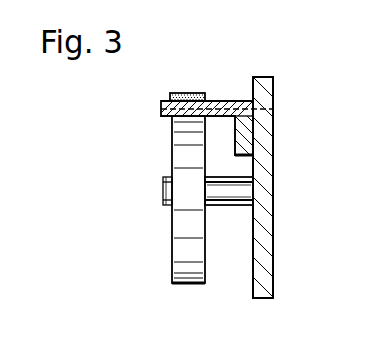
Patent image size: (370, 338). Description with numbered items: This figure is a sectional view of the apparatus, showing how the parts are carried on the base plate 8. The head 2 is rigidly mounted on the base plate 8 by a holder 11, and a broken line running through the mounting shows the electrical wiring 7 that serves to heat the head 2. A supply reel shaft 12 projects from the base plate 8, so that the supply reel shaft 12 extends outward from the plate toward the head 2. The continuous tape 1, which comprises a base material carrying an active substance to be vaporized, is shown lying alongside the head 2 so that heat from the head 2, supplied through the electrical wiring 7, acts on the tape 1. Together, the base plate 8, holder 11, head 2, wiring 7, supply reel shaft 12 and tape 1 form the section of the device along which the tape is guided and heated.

The continuous tape 1 is at (180, 162).
The head 2 is at (191, 93).
The electrical wiring 7 is at (232, 110).
The base plate 8 is at (263, 253).
The holder 11 is at (247, 142).
The supply reel shaft 12 is at (230, 192).